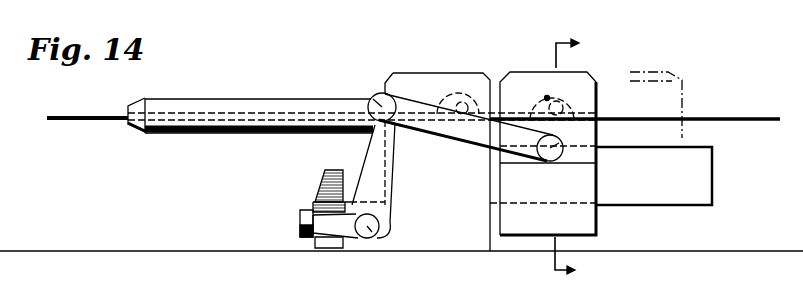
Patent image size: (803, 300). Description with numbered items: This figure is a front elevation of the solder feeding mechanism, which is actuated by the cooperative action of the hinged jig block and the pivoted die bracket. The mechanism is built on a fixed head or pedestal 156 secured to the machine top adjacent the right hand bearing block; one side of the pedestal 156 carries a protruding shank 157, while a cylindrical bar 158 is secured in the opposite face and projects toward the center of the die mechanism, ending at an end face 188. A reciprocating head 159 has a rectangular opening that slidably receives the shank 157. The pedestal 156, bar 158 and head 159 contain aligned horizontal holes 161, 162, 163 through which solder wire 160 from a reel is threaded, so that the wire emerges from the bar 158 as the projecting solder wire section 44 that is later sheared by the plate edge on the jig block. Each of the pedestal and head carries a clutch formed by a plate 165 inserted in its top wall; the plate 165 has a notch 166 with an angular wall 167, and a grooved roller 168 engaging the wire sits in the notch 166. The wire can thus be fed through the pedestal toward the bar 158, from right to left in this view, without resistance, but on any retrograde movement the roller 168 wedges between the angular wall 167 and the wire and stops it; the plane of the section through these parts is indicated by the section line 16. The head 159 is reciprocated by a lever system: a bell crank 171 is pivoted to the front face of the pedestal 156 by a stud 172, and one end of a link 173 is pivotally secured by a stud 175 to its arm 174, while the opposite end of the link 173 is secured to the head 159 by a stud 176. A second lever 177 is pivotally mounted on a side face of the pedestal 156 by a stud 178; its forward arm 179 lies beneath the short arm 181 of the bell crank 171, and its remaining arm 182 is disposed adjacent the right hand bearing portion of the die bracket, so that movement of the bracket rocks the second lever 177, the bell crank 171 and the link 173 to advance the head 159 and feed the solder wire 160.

The section line 16- 16 is at (575, 159).
The solder wire section 44 is at (86, 122).
The pedestal 156 is at (435, 234).
The shank 157 is at (663, 196).
The cylindrical bar 158 is at (224, 98).
The reciprocating head 159 is at (579, 226).
The solder wire 160 is at (736, 117).
The hole 161 is at (418, 112).
The hole 162 is at (290, 112).
The hole 163 is at (608, 84).
The plate 165 is at (386, 78).
The notch 166 is at (460, 100).
The angular wall 167 is at (549, 97).
The roller 168 is at (481, 88).
The bell crank 171 is at (388, 230).
The stud 172 is at (368, 238).
The link 173 is at (405, 99).
The arm 174 is at (363, 152).
The stud 175 is at (371, 98).
The stud 176 is at (562, 143).
The second lever 177 is at (313, 202).
The stud 178 is at (302, 222).
The forward arm 179 is at (328, 243).
The short arm 181 is at (322, 222).
The remaining arm 182 is at (322, 183).
The end face 188 is at (129, 107).